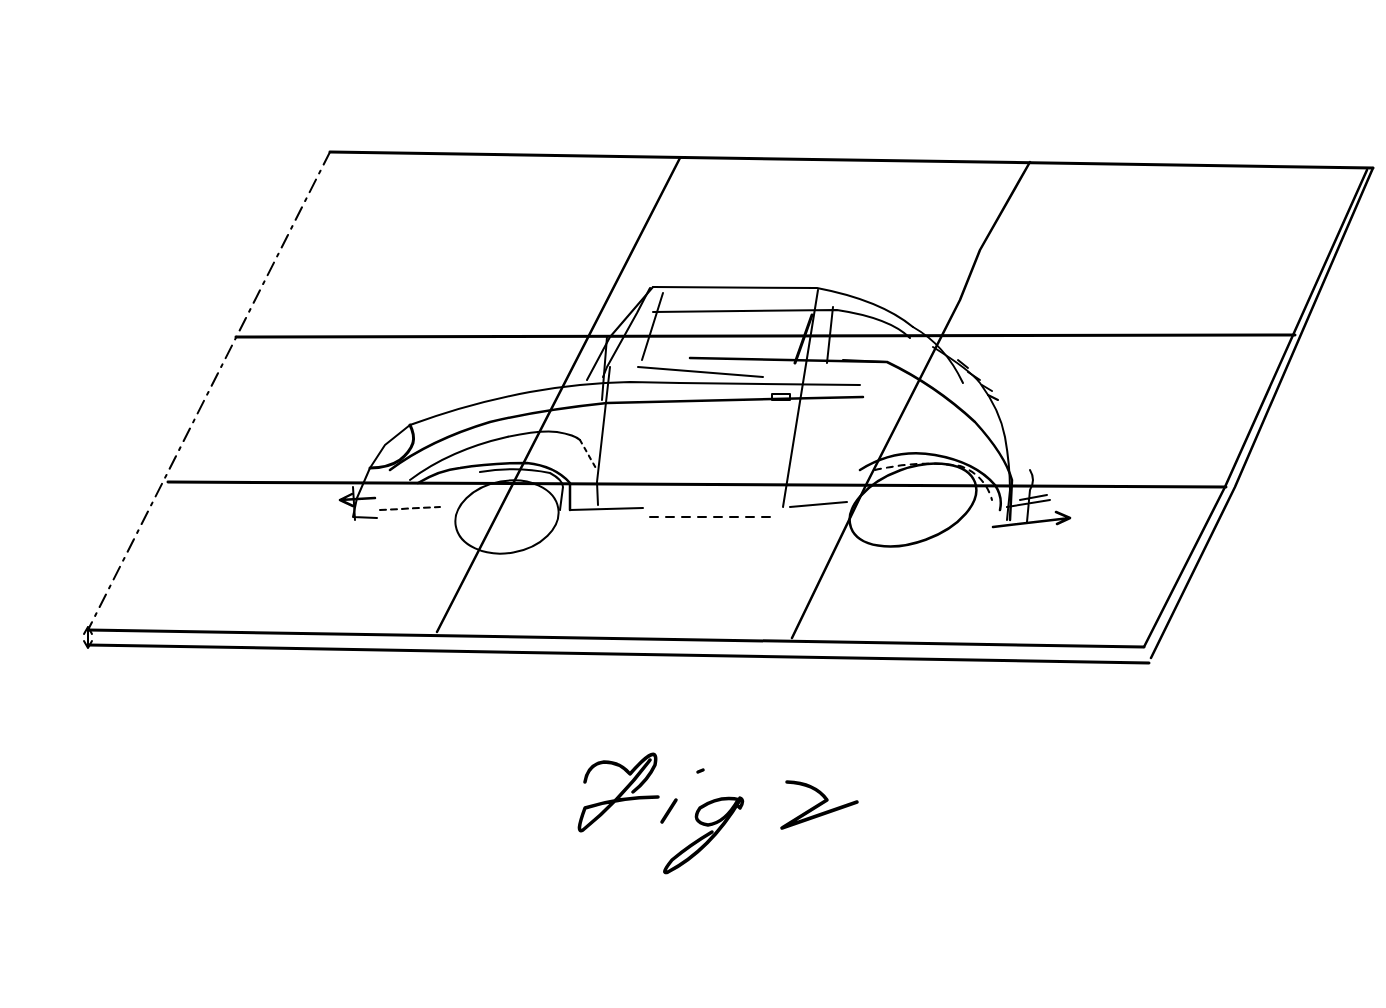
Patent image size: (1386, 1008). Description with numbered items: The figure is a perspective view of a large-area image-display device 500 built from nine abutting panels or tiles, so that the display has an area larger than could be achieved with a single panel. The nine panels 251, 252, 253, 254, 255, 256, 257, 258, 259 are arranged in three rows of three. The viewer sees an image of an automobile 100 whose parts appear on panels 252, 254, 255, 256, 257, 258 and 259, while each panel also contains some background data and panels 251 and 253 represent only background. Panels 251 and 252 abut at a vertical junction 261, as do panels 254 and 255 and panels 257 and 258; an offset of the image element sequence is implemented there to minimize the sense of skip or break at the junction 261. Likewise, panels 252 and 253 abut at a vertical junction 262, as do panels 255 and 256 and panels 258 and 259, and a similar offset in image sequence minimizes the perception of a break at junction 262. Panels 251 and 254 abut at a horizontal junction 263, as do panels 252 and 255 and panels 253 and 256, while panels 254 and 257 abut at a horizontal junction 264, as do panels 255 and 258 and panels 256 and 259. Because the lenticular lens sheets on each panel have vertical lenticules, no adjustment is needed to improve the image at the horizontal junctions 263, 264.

The large-area image-display device 500 is at (292, 134).
The automobile 100 is at (940, 270).
The panel 251 is at (467, 178).
The panel 252 is at (786, 179).
The panel 253 is at (1162, 178).
The panel 254 is at (227, 396).
The panel 255 is at (737, 468).
The panel 256 is at (1248, 402).
The panel 257 is at (300, 614).
The panel 258 is at (618, 620).
The panel 259 is at (980, 625).
The vertical junction 261 is at (676, 166).
The vertical junction 262 is at (1030, 174).
The horizontal junction 263 is at (364, 340).
The horizontal junction 264 is at (320, 484).